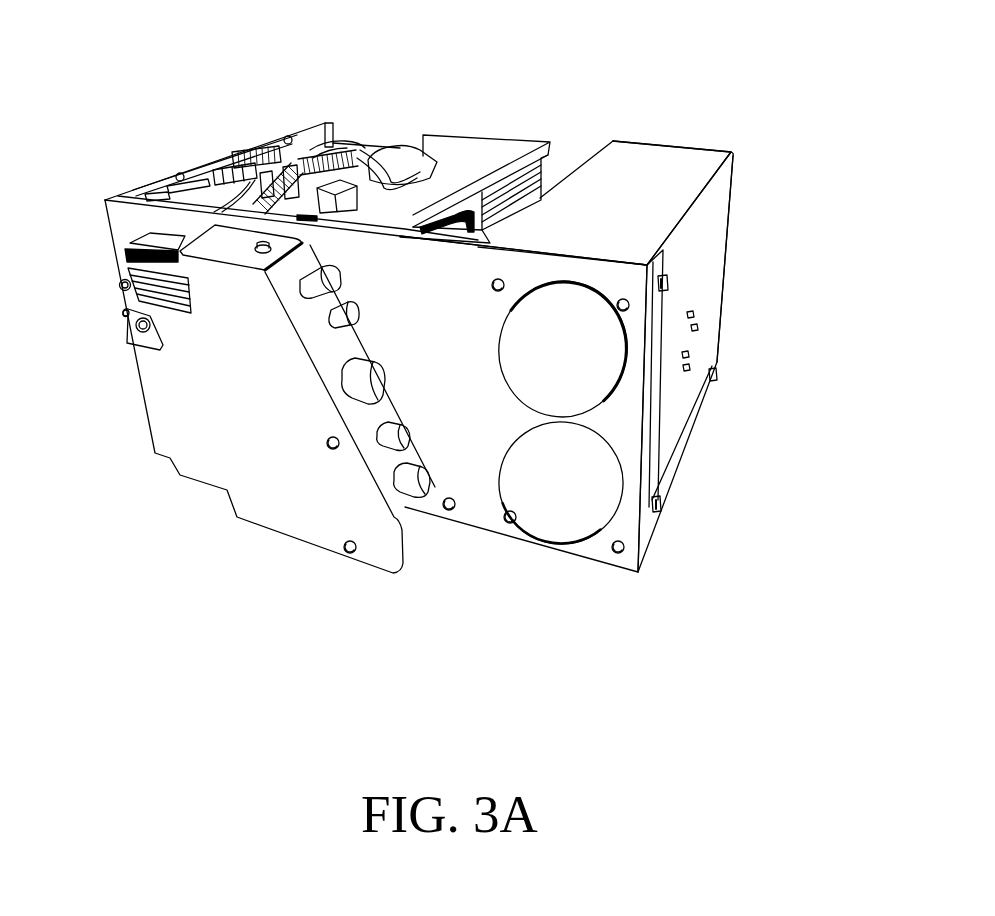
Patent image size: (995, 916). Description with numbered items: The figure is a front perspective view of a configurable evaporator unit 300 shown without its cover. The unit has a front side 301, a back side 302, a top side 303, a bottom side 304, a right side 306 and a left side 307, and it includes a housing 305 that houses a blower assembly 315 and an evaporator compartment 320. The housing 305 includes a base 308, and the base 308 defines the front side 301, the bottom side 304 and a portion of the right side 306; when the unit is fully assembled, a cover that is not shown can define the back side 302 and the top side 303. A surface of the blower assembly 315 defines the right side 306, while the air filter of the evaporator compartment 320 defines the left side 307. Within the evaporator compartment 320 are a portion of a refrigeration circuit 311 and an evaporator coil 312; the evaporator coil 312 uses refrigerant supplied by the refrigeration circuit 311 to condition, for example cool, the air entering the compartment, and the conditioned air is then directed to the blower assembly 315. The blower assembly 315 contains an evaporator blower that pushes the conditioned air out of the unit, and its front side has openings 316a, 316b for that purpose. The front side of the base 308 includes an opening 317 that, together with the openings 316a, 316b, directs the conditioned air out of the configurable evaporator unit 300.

The configurable evaporator unit 300 is at (779, 66).
The front side 301 is at (441, 513).
The back side 302 is at (561, 128).
The top side 303 is at (645, 146).
The bottom side 304 is at (676, 523).
The housing 305 is at (676, 465).
The right side 306 is at (716, 282).
The left side 307 is at (196, 147).
The base 308 is at (125, 218).
The refrigeration circuit 311 is at (372, 148).
The evaporator coil 312 is at (497, 150).
The blower assembly 315 is at (703, 224).
The opening 316a is at (530, 360).
The opening 316b is at (590, 505).
The opening 317 is at (613, 427).
The evaporator compartment 320 is at (380, 123).